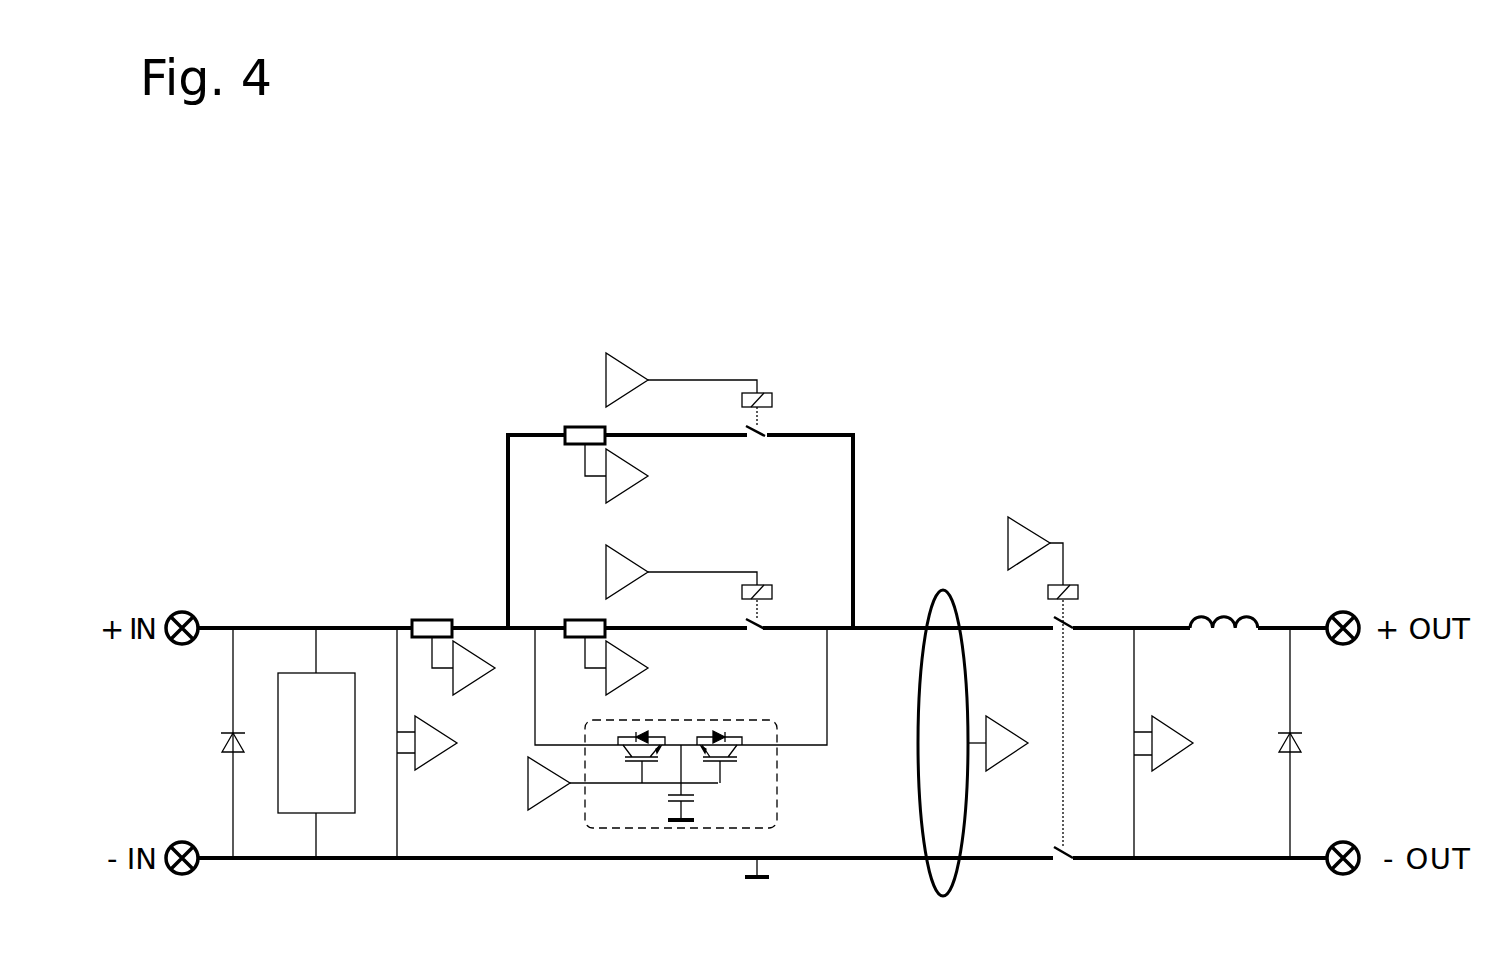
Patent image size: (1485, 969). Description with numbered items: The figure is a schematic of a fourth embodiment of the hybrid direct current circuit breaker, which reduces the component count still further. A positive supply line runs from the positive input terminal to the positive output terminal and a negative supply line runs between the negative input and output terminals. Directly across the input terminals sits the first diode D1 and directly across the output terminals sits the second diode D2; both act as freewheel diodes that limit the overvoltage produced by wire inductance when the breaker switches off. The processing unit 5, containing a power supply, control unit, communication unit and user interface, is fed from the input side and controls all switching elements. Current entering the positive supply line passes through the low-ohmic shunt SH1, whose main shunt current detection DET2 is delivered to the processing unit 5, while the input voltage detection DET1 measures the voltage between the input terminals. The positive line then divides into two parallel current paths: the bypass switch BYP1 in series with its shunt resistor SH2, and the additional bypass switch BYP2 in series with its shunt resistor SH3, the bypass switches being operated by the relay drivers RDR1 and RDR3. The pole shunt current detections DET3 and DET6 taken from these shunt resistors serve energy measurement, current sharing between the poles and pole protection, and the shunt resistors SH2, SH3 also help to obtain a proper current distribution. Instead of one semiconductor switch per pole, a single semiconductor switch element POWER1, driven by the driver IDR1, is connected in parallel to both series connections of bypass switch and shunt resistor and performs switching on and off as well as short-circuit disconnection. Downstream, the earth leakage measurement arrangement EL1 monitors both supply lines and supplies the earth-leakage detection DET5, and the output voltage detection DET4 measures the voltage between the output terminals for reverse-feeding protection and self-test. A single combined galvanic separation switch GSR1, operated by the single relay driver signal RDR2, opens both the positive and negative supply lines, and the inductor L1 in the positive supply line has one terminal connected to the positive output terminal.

The processing unit 5 is at (343, 687).
The first diode D1 is at (222, 743).
The second diode D2 is at (1300, 743).
The low-ohmic shunt SH1 is at (432, 616).
The shunt resistor SH2 is at (585, 619).
The shunt resistor SH3 is at (585, 425).
The inductor L1 is at (1224, 611).
The earth leakage measurement arrangement EL1 is at (943, 733).
The input voltage detection DET1 is at (427, 743).
The main shunt current detection DET2 is at (463, 666).
The pole shunt current detection DET3 is at (616, 666).
The output voltage detection DET4 is at (998, 743).
The earth-leakage detection DET5 is at (1163, 743).
The pole shunt current detection DET6 is at (616, 473).
The relay driver RDR1 is at (681, 572).
The relay driver signal RDR2 is at (1035, 551).
The relay driver RDR3 is at (681, 380).
The bypass switch BYP1 is at (772, 607).
The additional bypass switch BYP2 is at (772, 414).
The galvanic separation switch GSR1 is at (1048, 721).
The semiconductor switch driver IDR1 is at (623, 783).
The semiconductor switch element POWER1 is at (681, 728).